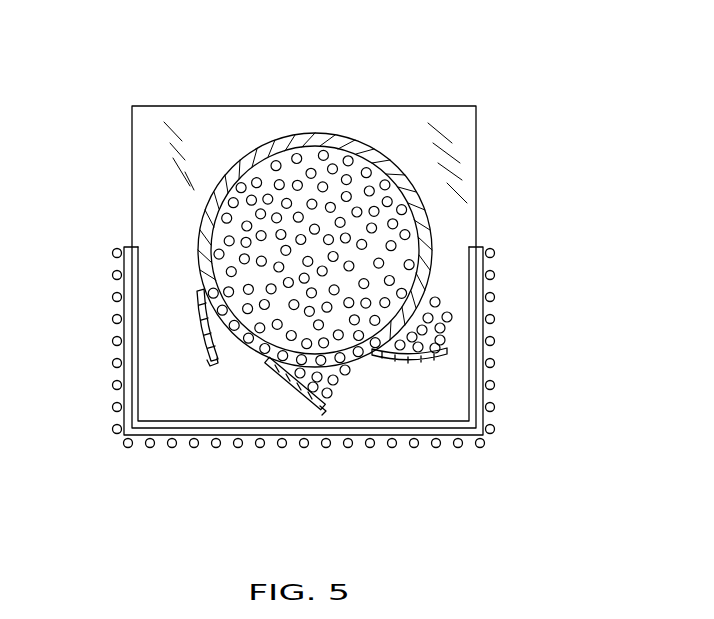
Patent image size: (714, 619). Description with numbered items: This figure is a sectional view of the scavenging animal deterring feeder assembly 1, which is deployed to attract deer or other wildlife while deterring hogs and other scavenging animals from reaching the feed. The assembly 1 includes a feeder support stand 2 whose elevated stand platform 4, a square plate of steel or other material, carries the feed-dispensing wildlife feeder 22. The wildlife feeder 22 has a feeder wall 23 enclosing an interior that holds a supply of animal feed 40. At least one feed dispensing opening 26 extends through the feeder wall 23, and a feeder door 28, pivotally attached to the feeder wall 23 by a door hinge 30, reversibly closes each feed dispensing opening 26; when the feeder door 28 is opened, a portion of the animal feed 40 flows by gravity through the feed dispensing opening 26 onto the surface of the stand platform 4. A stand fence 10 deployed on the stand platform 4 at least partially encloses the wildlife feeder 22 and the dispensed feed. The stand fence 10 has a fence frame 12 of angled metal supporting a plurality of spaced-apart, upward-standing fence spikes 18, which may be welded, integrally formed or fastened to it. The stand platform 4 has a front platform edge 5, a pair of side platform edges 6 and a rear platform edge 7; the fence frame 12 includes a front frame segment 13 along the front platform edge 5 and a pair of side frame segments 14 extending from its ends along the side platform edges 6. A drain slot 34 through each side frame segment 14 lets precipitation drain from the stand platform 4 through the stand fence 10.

The scavenging animal deterring feeder assembly 1 is at (519, 30).
The feeder support stand 2 is at (155, 99).
The stand platform 4 is at (430, 104).
The front platform edge 5 is at (452, 449).
The side platform edge 6 is at (132, 150).
The rear platform edge 7 is at (384, 106).
The stand fence 10 is at (106, 423).
The fence frame 12 is at (163, 445).
The front frame segment 13 is at (378, 441).
The side frame segment 14 is at (305, 348).
The fence spike 18 is at (305, 380).
The feed-dispensing wildlife feeder 22 is at (272, 138).
The feeder wall 23 is at (315, 197).
The feed dispensing opening 26 is at (205, 224).
The feeder door 28 is at (295, 388).
The door hinge 30 is at (198, 286).
The drain slot 34 is at (117, 295).
The animal feed 40 is at (298, 214).